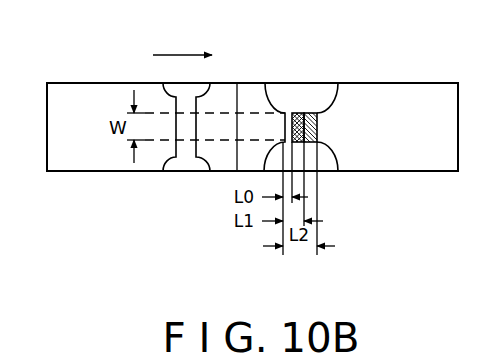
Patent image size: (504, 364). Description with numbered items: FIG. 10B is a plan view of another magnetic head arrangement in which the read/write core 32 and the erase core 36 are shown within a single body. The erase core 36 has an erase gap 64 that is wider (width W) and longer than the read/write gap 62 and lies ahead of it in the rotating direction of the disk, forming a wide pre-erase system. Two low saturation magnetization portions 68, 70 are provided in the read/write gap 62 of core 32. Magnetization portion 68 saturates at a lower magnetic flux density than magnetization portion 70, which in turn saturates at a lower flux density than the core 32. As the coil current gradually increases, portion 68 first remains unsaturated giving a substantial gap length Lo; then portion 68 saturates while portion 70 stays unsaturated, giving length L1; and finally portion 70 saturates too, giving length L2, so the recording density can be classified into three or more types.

The read/write core 32 is at (442, 137).
The erase core 36 is at (65, 98).
The read/write gap 62 is at (285, 112).
The erase gap 64 is at (182, 153).
The low saturation magnetization portion 68 is at (297, 113).
The low saturation magnetization portion 70 is at (311, 113).